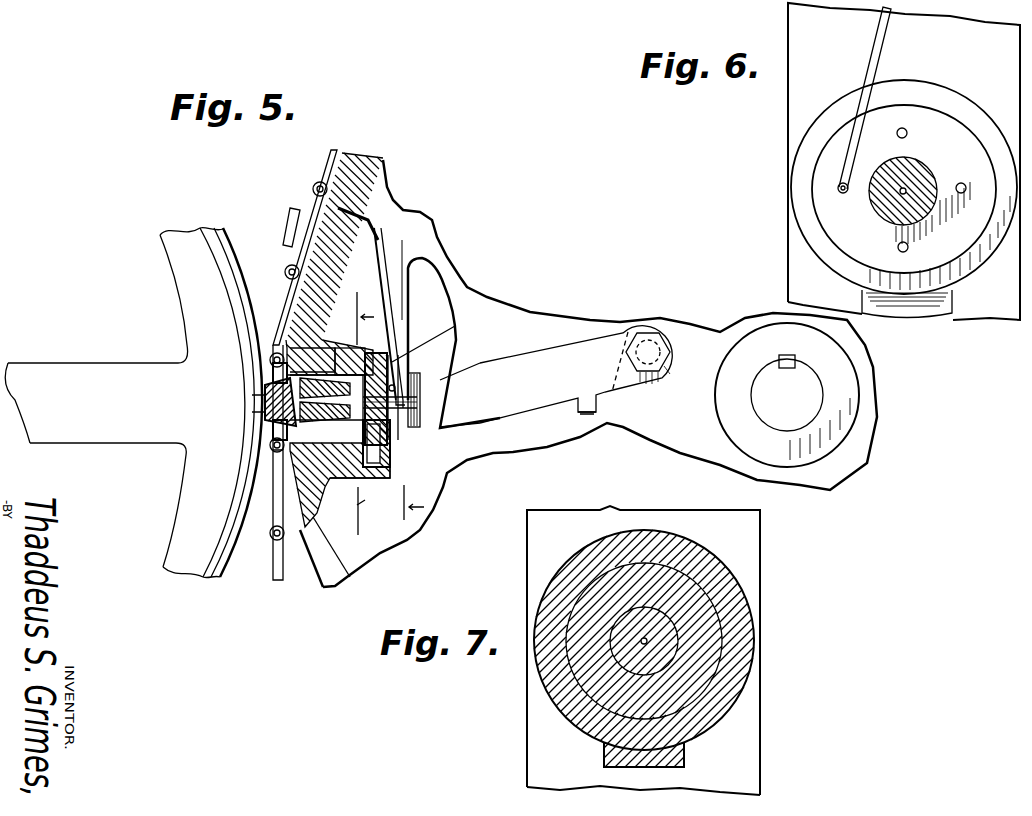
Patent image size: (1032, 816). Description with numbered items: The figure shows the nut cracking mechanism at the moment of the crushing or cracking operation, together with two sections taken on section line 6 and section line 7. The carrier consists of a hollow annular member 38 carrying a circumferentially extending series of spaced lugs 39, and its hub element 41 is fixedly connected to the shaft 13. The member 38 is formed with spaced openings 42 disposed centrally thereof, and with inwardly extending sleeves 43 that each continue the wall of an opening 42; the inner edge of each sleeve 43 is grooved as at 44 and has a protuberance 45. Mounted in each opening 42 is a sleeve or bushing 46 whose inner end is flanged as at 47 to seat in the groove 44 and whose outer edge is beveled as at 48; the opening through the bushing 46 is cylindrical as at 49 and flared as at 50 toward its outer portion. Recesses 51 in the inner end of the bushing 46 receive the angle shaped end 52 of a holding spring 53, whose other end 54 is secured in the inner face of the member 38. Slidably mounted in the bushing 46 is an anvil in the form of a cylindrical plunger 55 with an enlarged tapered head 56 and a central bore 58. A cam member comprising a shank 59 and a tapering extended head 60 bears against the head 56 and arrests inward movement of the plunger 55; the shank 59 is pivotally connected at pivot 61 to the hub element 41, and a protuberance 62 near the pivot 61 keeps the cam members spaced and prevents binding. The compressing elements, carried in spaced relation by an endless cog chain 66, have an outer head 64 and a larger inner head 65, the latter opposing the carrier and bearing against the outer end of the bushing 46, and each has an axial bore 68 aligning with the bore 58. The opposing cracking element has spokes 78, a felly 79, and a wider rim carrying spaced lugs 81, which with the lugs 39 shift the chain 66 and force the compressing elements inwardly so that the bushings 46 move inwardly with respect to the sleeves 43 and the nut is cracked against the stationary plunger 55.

In FIG. 5, the section line 6— 6 is at (410, 382).
In FIG. 5, the section line 7— 7 is at (363, 415).
In FIG. 5, the shaft 13 is at (787, 395).
In FIG. 5, the hollow annular member 38 is at (358, 183).
In FIG. 6, the hollow annular member 38 is at (792, 95).
In FIG. 7, the hollow annular member 38 is at (528, 541).
In FIG. 5, the spaced lugs 39 is at (290, 226).
In FIG. 5, the hub element 41 is at (630, 325).
In FIG. 5, the spaced openings 42 is at (305, 356).
In FIG. 5, the inwardly extending sleeves 43 is at (350, 360).
In FIG. 7, the inwardly extending sleeves 43 is at (600, 545).
In FIG. 5, the groove 44 is at (370, 500).
In FIG. 5, the protuberance 45 is at (393, 478).
In FIG. 6, the protuberance 45 is at (950, 302).
In FIG. 7, the protuberance 45 is at (686, 755).
In FIG. 5, the sleeve or bushing 46 is at (330, 442).
In FIG. 7, the sleeve or bushing 46 is at (667, 593).
In FIG. 5, the flange 47 is at (385, 447).
In FIG. 5, the beveled outer edge 48 is at (285, 273).
In FIG. 5, the cylindrical portion 49 is at (400, 372).
In FIG. 5, the flared portion 50 is at (423, 341).
In FIG. 5, the recesses 51 is at (395, 385).
In FIG. 6, the recesses 51 is at (906, 130).
In FIG. 5, the angle shaped end 52 is at (410, 395).
In FIG. 6, the angle shaped end 52 is at (834, 180).
In FIG. 5, the holding spring 53 is at (390, 298).
In FIG. 6, the holding spring 53 is at (877, 64).
In FIG. 5, the other end of holding spring 54 is at (370, 214).
In FIG. 5, the cylindrical plunger 55 is at (420, 402).
In FIG. 7, the cylindrical plunger 55 is at (662, 630).
In FIG. 5, the enlarged tapered head 56 is at (422, 410).
In FIG. 7, the bore 58 is at (648, 642).
In FIG. 5, the shank 59 is at (556, 376).
In FIG. 5, the tapering extended head 60 is at (456, 330).
In FIG. 5, the pivot 61 is at (650, 345).
In FIG. 5, the protuberance 62 is at (579, 410).
In FIG. 5, the outer head 64 is at (275, 372).
In FIG. 6, the outer head 64 is at (828, 210).
In FIG. 5, the inner head 65 is at (272, 362).
In FIG. 6, the inner head 65 is at (802, 178).
In FIG. 5, the endless cog chain 66 is at (333, 159).
In FIG. 5, the axial bore 68 is at (268, 392).
In FIG. 5, the spokes 78 is at (84, 366).
In FIG. 5, the felly 79 is at (196, 324).
In FIG. 5, the spaced lugs 81 is at (262, 404).